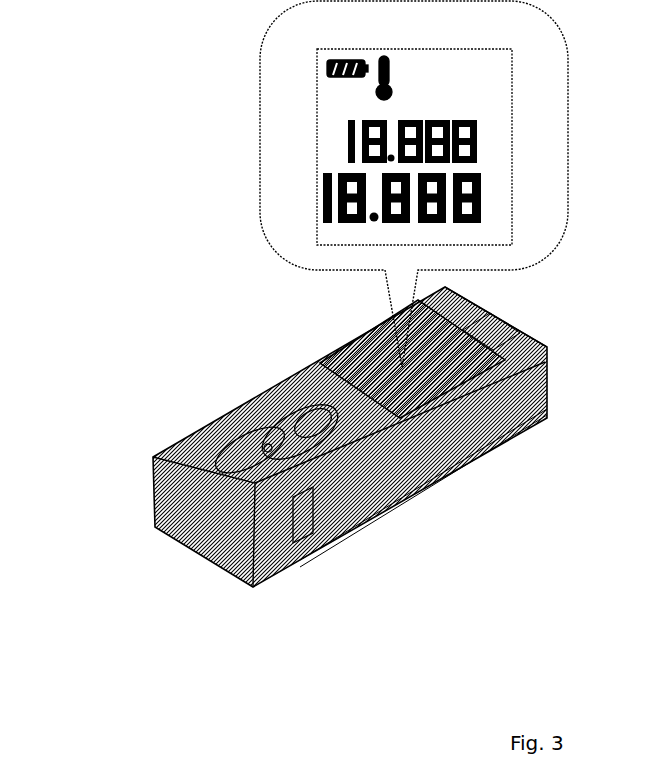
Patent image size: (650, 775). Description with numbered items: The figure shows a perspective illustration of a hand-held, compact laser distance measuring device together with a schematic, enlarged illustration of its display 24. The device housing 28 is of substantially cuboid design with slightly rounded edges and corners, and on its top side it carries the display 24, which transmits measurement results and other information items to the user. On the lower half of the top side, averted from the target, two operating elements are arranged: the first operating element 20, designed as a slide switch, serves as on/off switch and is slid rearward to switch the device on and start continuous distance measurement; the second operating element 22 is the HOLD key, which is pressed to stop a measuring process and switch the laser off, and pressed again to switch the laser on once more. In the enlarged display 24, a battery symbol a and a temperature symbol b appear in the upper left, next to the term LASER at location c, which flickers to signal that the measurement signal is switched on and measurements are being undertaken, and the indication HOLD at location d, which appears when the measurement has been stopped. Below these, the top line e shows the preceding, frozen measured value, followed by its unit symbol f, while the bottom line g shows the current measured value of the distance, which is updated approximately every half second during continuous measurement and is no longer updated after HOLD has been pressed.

The first operating element 20 is at (248, 447).
The second operating element 22 is at (310, 425).
The display 24 is at (353, 358).
The housing 28 is at (212, 525).
The battery status indicator a is at (347, 49).
The temperature indicator b is at (385, 49).
The location of the LASER indication c is at (505, 66).
The location of the HOLD indication d is at (483, 91).
The top line of the display e is at (485, 130).
The unit indicator f is at (510, 158).
The bottom line of the display g is at (485, 188).